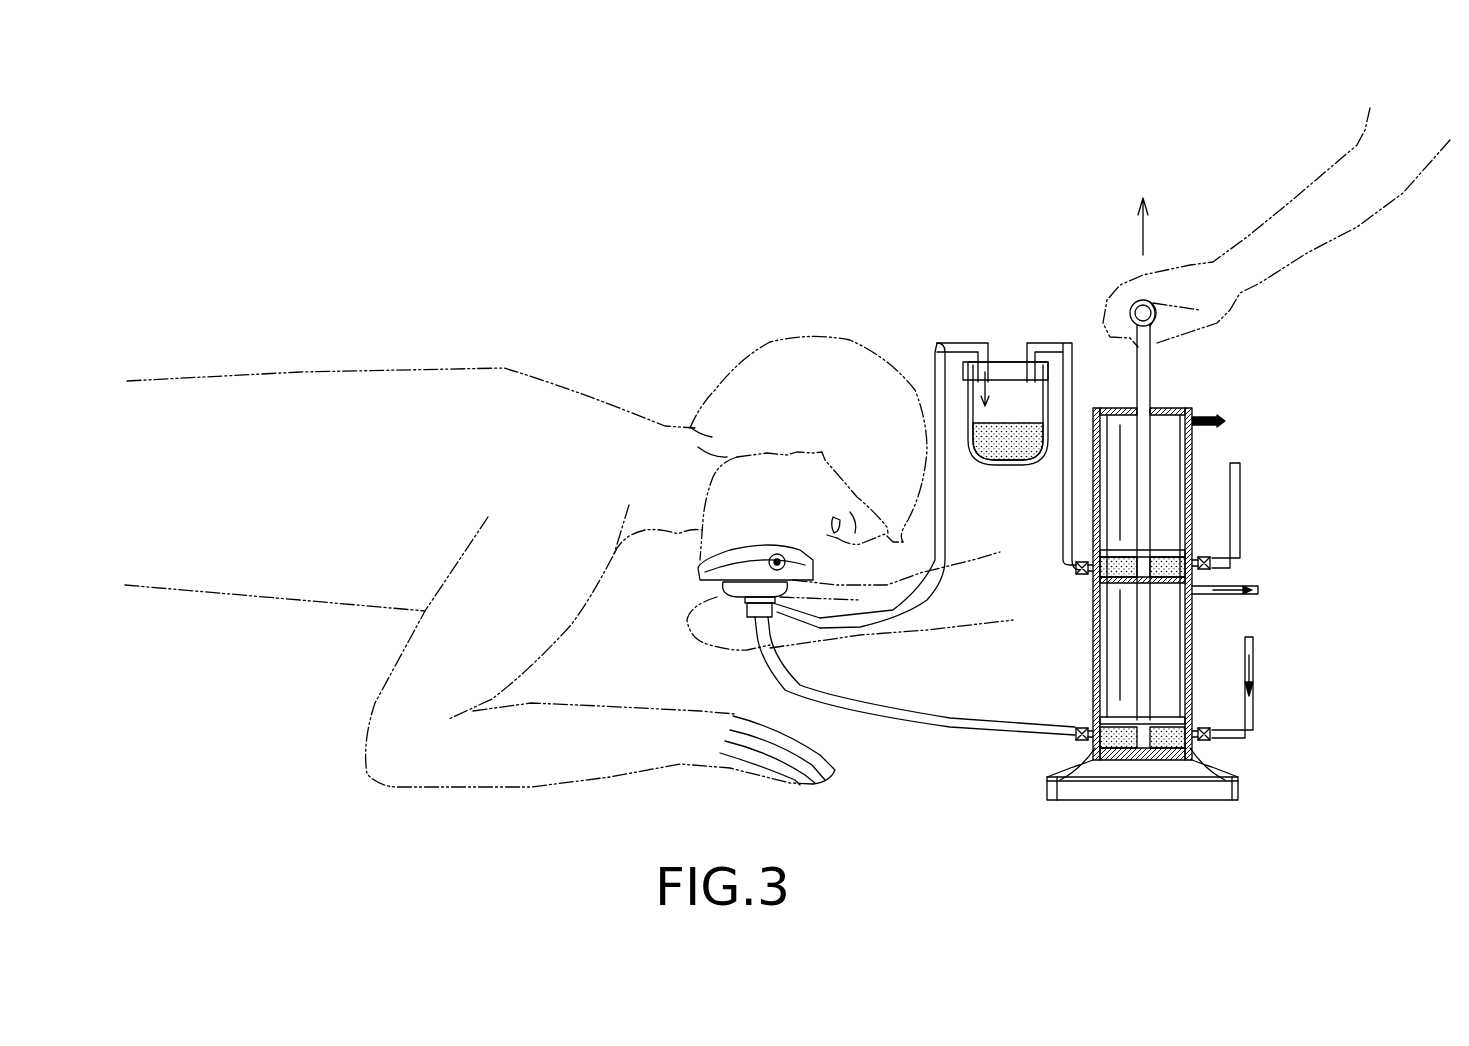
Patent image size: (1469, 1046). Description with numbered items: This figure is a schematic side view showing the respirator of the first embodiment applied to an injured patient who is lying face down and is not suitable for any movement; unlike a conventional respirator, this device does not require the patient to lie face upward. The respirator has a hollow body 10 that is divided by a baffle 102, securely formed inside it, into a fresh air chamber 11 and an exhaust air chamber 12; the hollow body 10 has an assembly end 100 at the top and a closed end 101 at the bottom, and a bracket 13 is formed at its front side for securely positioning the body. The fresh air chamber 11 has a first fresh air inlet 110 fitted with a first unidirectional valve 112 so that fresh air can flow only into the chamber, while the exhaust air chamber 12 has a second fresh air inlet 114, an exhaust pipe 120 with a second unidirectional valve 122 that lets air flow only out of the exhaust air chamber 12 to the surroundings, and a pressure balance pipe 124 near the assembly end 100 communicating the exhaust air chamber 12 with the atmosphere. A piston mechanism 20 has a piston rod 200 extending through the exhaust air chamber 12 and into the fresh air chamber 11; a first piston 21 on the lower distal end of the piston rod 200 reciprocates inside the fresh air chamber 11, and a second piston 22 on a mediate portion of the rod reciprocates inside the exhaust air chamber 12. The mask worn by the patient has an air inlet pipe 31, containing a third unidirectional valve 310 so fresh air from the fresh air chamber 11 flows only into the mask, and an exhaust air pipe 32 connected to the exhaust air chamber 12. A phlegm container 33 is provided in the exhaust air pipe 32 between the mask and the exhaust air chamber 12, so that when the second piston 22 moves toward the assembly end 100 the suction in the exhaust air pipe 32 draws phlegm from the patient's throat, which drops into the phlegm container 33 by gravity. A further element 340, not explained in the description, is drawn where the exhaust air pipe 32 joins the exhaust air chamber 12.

The hollow body 10 is at (1312, 507).
The fresh air chamber 11 is at (1097, 643).
The exhaust air chamber 12 is at (1120, 432).
The bracket 13 is at (1235, 783).
The piston mechanism 20 is at (1163, 368).
The first piston 21 is at (1097, 713).
The second piston 22 is at (1108, 560).
The air inlet pipe 31 is at (977, 733).
The exhaust air pipe 32 is at (960, 345).
The phlegm container 33 is at (1008, 360).
The assembly end 100 is at (1180, 405).
The closed end 101 is at (1207, 753).
The baffle 102 is at (1187, 570).
The first fresh air inlet 110 is at (1253, 650).
The first unidirectional valve 112 is at (1200, 728).
The second fresh air inlet 114 is at (1257, 595).
The exhaust pipe 120 is at (1240, 478).
The second unidirectional valve 122 is at (1203, 555).
The pressure balance pipe 124 is at (1220, 427).
The piston rod 200 is at (1140, 712).
The third unidirectional valve 310 is at (1075, 742).
The return check valve 340 is at (1075, 570).